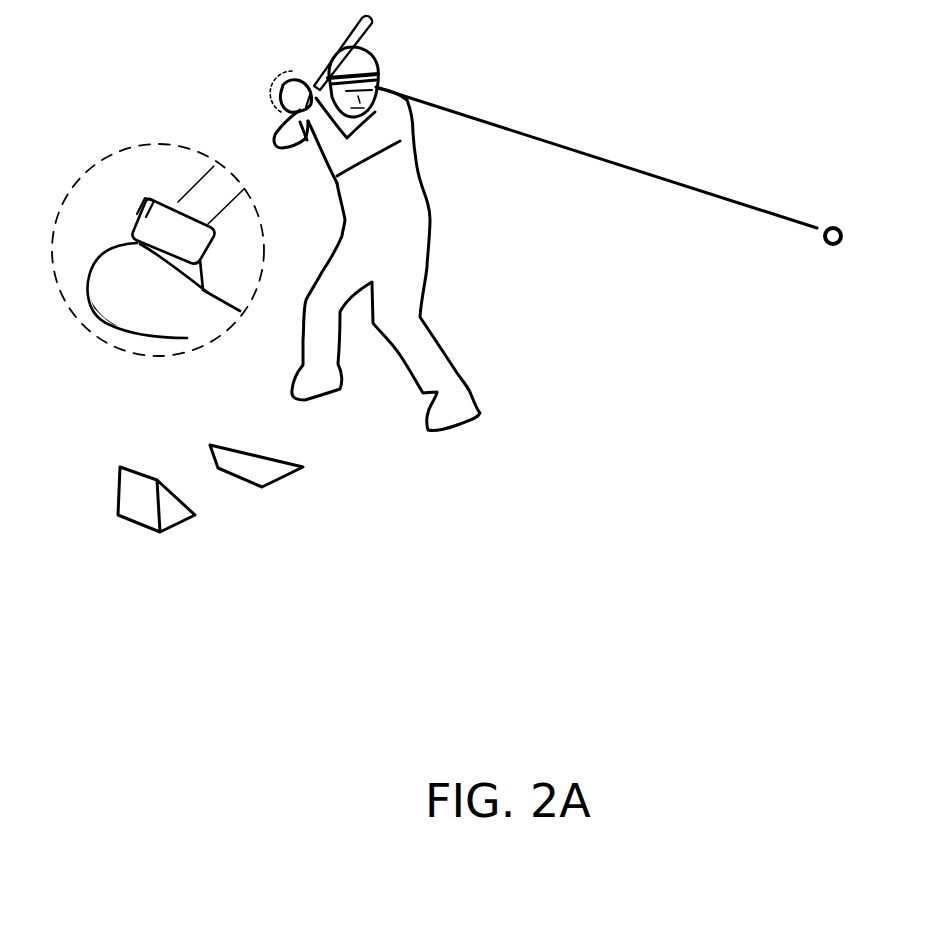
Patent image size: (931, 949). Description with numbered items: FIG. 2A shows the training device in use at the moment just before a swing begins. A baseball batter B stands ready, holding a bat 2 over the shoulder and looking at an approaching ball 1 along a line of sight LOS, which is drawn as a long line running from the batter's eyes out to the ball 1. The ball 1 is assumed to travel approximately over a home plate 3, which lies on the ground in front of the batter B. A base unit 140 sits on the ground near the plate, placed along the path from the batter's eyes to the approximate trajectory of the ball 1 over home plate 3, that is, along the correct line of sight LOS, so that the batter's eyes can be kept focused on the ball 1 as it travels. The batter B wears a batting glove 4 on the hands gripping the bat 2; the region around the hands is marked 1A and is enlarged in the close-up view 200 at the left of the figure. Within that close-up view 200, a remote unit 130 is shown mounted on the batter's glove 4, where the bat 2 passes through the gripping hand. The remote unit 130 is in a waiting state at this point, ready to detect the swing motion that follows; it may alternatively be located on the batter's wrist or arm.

The ball 1 is at (830, 221).
The hands of batter 1A is at (273, 102).
The bat 2 is at (378, 32).
The home plate 3 is at (243, 444).
The batting glove 4 is at (289, 87).
The remote unit 130 is at (134, 215).
The base unit 140 is at (119, 466).
The close-up view 200 is at (107, 164).
The baseball batter B is at (412, 203).
The line of sight LOS is at (530, 135).